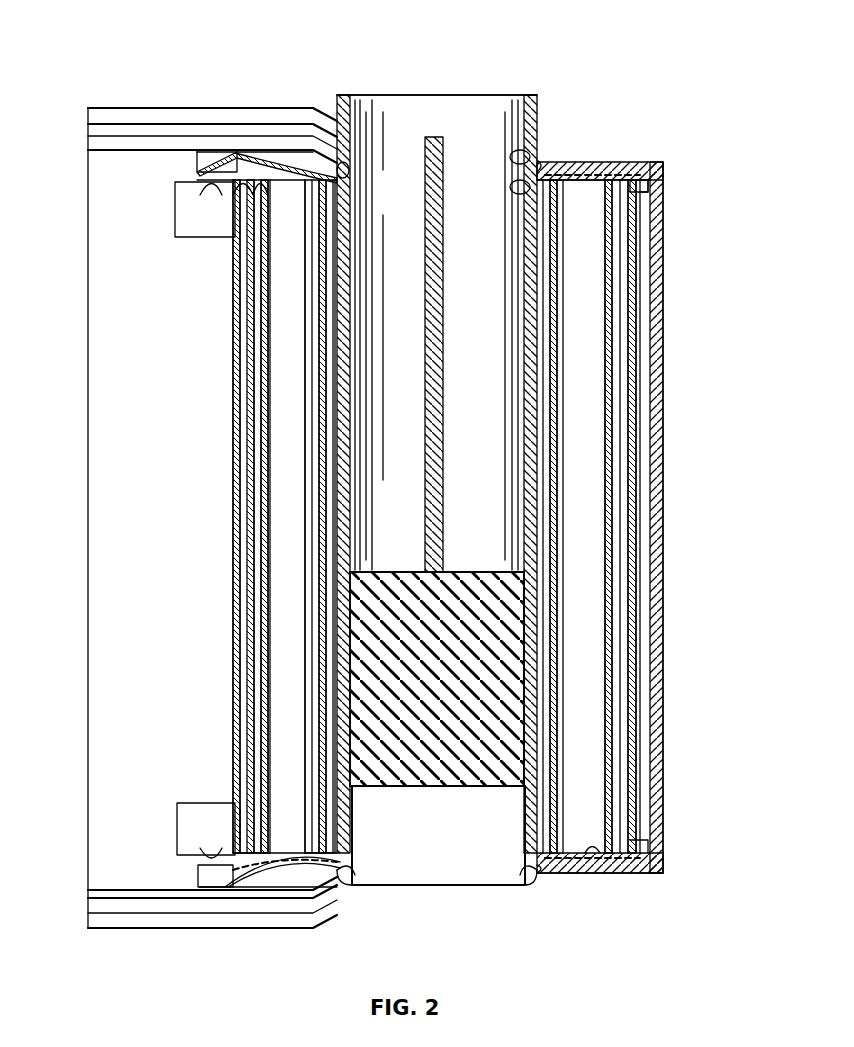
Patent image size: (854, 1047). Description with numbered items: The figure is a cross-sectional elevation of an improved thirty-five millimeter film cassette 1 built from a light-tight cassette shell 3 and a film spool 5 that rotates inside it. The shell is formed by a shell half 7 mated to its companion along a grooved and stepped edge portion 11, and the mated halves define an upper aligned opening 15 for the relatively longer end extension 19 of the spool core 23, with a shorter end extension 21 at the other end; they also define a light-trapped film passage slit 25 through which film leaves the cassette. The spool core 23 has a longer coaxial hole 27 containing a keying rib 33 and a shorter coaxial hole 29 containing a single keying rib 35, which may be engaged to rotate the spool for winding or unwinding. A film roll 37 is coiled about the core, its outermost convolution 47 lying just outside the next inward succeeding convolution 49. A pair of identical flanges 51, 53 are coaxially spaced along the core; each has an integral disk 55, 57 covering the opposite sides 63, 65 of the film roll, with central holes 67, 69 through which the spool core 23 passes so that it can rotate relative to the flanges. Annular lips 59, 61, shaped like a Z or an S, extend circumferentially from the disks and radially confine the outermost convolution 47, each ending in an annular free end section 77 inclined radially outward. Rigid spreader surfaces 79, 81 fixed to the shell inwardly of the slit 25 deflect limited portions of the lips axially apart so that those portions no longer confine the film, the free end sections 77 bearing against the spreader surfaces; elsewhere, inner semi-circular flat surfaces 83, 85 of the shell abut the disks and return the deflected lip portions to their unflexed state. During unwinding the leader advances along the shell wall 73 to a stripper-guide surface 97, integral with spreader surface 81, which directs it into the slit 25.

The film cassette 1 is at (170, 96).
The cassette shell 3 is at (663, 812).
The film spool 5 is at (233, 500).
The shell half 7 is at (215, 108).
The grooved and stepped edge portion 11 is at (95, 122).
The upper aligned opening 15 is at (545, 160).
The longer opposite end extension 19 is at (540, 100).
The shorter opposite end extension 21 is at (537, 880).
The spool core 23 is at (486, 578).
The film passage slit 25 is at (120, 290).
The longer coaxial hole 27 is at (408, 108).
The shorter coaxial hole 29 is at (412, 860).
The keying rib 33 is at (443, 168).
The keying rib 35 is at (478, 788).
The film roll 37 is at (233, 345).
The outermost convolution 47 is at (233, 378).
The next inward succeeding convolution 49 is at (233, 425).
The flange 51 is at (250, 155).
The flange 53 is at (220, 872).
The disk 55 is at (295, 176).
The disk 57 is at (290, 880).
The annular lip 59 is at (197, 163).
The annular lip 61 is at (205, 880).
The side of film roll 63 is at (258, 186).
The side of film roll 65 is at (260, 868).
The central hole 67 is at (345, 170).
The central hole 69 is at (352, 882).
The shell wall 73 is at (650, 500).
The annular free end section 77 is at (690, 815).
The spreader surface 79 is at (175, 182).
The spreader surface 81 is at (180, 860).
The semi-circular flat surface 83 is at (585, 172).
The semi-circular flat surface 85 is at (592, 865).
The stripper-guide surface 97 is at (225, 800).